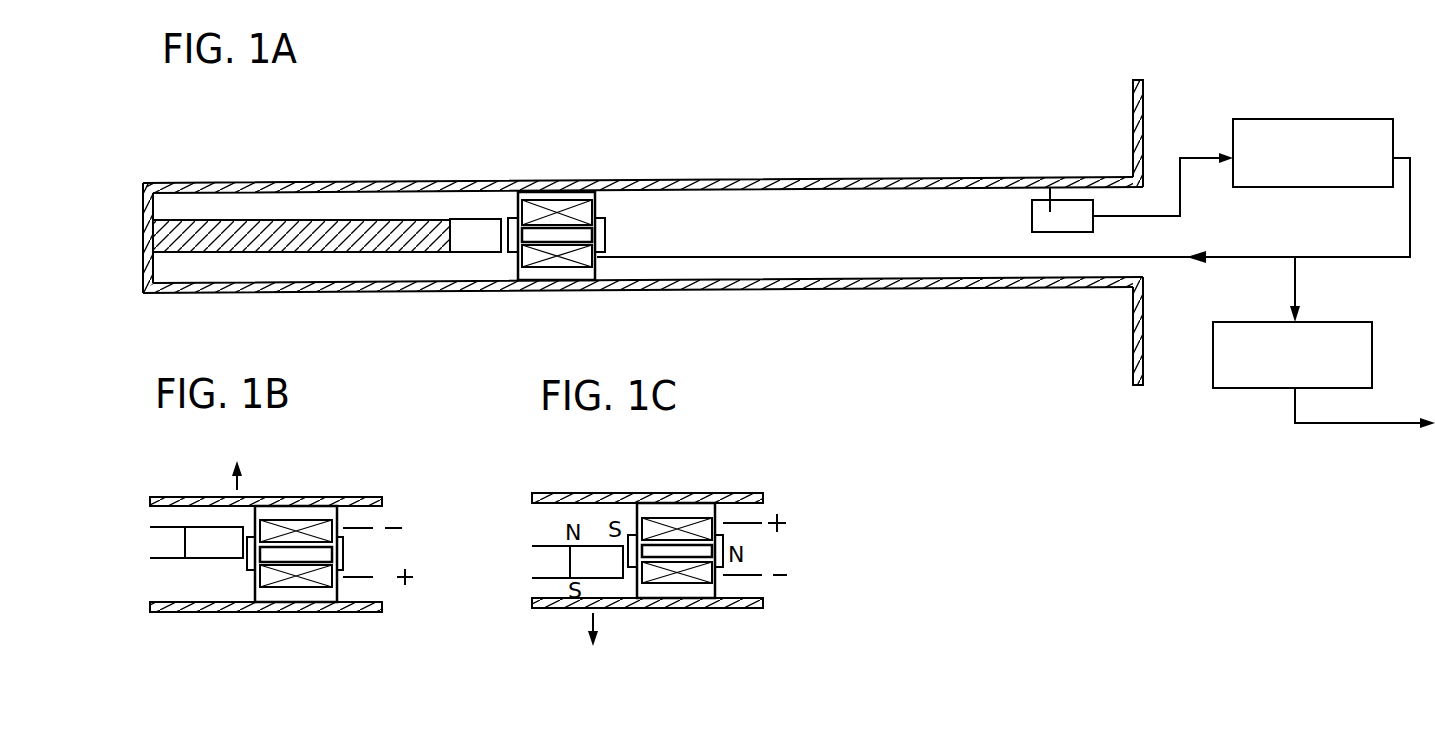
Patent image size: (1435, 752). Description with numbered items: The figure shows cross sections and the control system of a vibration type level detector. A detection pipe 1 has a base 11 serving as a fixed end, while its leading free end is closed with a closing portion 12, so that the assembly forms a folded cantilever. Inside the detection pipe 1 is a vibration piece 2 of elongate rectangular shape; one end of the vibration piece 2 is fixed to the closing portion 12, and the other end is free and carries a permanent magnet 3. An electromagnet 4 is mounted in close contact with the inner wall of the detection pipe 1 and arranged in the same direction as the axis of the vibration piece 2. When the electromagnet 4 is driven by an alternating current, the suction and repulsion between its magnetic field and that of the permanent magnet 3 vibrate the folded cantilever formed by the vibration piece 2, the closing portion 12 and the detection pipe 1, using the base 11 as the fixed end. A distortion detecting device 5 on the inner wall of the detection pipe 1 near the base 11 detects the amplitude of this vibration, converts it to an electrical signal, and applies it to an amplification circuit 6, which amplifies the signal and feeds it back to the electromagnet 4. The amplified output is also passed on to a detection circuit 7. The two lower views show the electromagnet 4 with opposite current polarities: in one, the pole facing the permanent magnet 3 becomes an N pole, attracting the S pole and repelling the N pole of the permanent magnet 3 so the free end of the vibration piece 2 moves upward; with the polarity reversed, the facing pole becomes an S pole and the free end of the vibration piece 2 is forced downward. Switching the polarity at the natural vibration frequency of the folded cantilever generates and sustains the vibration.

In FIG. 1A, the detection pipe 1 is at (683, 183).
In FIG. 1A, the vibration piece 2 is at (354, 222).
In FIG. 1B, the vibration piece 2 is at (155, 527).
In FIG. 1A, the permanent magnet 3 is at (489, 233).
In FIG. 1B, the permanent magnet 3 is at (215, 537).
In FIG. 1A, the electromagnet 4 is at (566, 200).
In FIG. 1B, the electromagnet 4 is at (300, 520).
In FIG. 1A, the distortion detecting device 5 is at (1039, 188).
In FIG. 1A, the amplification circuit 6 is at (1318, 119).
In FIG. 1A, the detection circuit 7 is at (1328, 322).
In FIG. 1A, the base 11 is at (1133, 125).
In FIG. 1A, the closing portion 12 is at (143, 235).